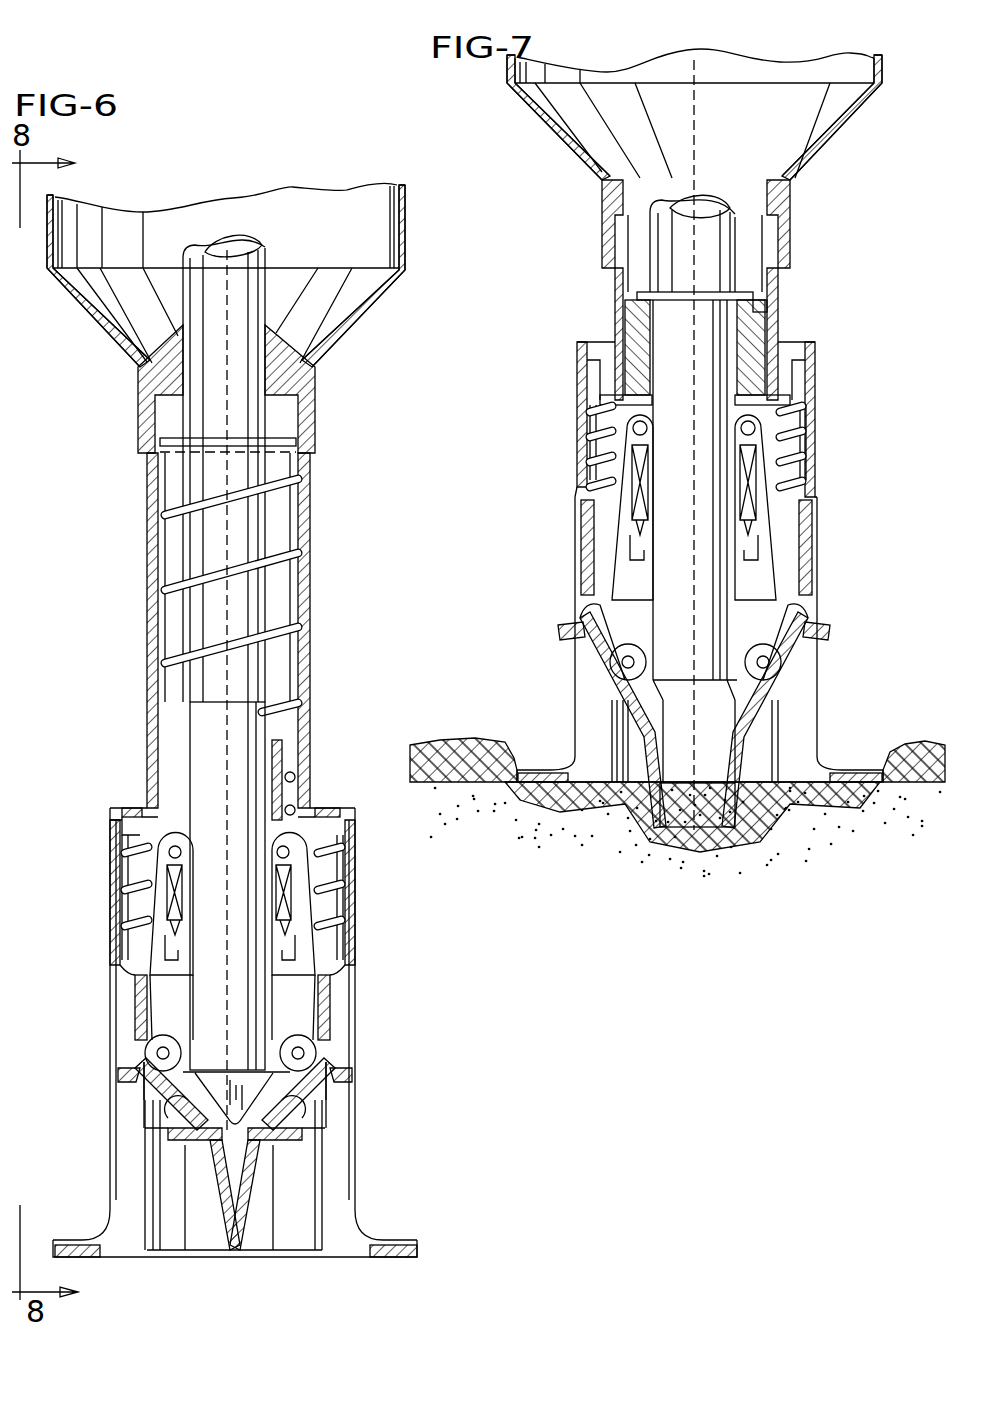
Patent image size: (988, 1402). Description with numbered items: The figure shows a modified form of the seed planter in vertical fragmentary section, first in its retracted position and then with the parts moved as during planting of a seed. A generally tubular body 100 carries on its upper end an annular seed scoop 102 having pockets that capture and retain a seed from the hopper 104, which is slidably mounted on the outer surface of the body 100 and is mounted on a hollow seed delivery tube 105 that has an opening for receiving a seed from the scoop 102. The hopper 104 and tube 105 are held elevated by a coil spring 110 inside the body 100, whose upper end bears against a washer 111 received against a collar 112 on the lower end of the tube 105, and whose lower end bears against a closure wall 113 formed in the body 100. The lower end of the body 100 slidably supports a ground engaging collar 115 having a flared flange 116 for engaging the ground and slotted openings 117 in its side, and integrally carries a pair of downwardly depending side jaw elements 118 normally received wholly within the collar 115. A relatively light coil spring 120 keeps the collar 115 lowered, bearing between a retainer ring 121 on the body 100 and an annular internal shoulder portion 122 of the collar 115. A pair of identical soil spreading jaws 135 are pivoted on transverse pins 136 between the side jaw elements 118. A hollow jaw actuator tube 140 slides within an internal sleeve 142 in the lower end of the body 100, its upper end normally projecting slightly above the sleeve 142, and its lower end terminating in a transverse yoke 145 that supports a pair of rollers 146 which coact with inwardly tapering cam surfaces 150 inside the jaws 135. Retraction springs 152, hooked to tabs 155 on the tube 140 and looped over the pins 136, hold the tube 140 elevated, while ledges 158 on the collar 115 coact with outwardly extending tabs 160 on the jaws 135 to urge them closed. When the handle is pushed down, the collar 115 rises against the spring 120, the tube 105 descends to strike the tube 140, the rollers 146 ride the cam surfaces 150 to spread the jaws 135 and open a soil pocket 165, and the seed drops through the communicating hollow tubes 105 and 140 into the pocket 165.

In FIG. 6, the tubular body 100 is at (310, 585).
In FIG. 7, the tubular body 100 is at (615, 285).
In FIG. 6, the annular seed scoop 102 is at (300, 385).
In FIG. 6, the hopper 104 is at (404, 250).
In FIG. 7, the hopper 104 is at (548, 128).
In FIG. 6, the seed delivery tube 105 is at (205, 272).
In FIG. 7, the seed delivery tube 105 is at (700, 240).
In FIG. 6, the coil spring 110 is at (280, 505).
In FIG. 7, the coil spring 110 is at (625, 325).
In FIG. 7, the washer 111 is at (765, 305).
In FIG. 7, the collar 112 is at (742, 295).
In FIG. 6, the closure wall 113 is at (130, 835).
In FIG. 7, the closure wall 113 is at (775, 400).
In FIG. 6, the ground engaging collar 115 is at (350, 1000).
In FIG. 6, the flange 116 is at (400, 1260).
In FIG. 6, the slotted openings 117 is at (335, 1118).
In FIG. 6, the side jaw elements 118 is at (262, 1243).
In FIG. 6, the coil spring 120 is at (332, 885).
In FIG. 7, the coil spring 120 is at (600, 410).
In FIG. 6, the retainer ring 121 is at (320, 808).
In FIG. 7, the internal shoulder portion 122 is at (590, 490).
In FIG. 6, the soil spreading jaws 135 is at (250, 1165).
In FIG. 7, the soil spreading jaws 135 is at (645, 740).
In FIG. 6, the pins 136 is at (290, 845).
In FIG. 6, the jaw actuator tube 140 is at (242, 738).
In FIG. 7, the jaw actuator tube 140 is at (695, 445).
In FIG. 6, the sleeve 142 is at (276, 762).
In FIG. 6, the yoke 145 is at (325, 1100).
In FIG. 6, the rollers 146 is at (305, 1030).
In FIG. 7, the rollers 146 is at (760, 650).
In FIG. 6, the cam surfaces 150 is at (165, 1130).
In FIG. 7, the cam surfaces 150 is at (820, 630).
In FIG. 6, the retraction springs 152 is at (290, 905).
In FIG. 6, the tabs 155 is at (296, 945).
In FIG. 6, the ledges 158 is at (120, 1050).
In FIG. 7, the ledges 158 is at (585, 595).
In FIG. 6, the tabs 160 is at (130, 1075).
In FIG. 7, the tabs 160 is at (830, 630).
In FIG. 7, the soil pocket 165 is at (710, 815).